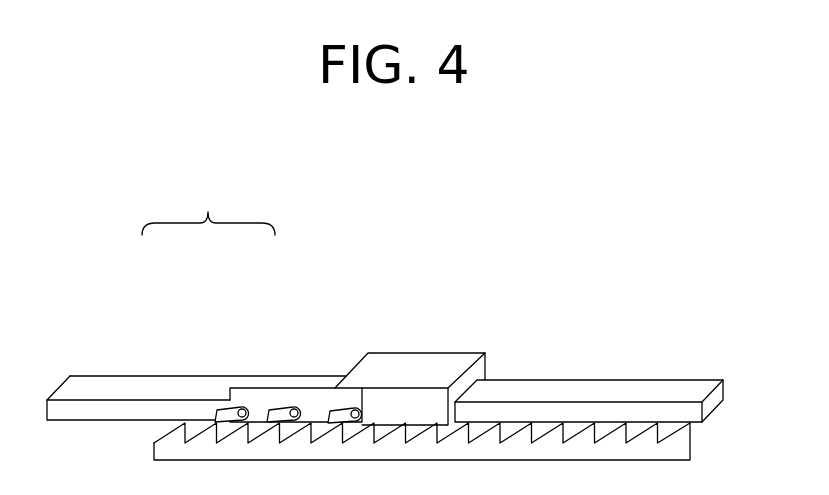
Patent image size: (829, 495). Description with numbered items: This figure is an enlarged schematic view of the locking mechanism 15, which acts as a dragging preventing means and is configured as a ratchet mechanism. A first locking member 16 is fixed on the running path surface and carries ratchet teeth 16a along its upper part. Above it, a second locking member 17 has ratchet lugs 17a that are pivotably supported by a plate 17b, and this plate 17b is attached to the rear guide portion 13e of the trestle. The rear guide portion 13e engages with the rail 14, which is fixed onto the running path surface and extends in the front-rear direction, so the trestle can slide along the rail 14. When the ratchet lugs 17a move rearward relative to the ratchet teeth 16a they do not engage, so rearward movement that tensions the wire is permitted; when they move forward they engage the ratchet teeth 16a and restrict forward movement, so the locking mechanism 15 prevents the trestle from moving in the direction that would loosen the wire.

The rear guide portion 13e is at (418, 368).
The rail 14 is at (655, 390).
The locking mechanism 15 is at (208, 203).
The first locking member 16 is at (368, 343).
The ratchet teeth 16a is at (208, 440).
The second locking member 17 is at (331, 325).
The ratchet lugs 17a is at (282, 410).
The plate 17b is at (353, 326).